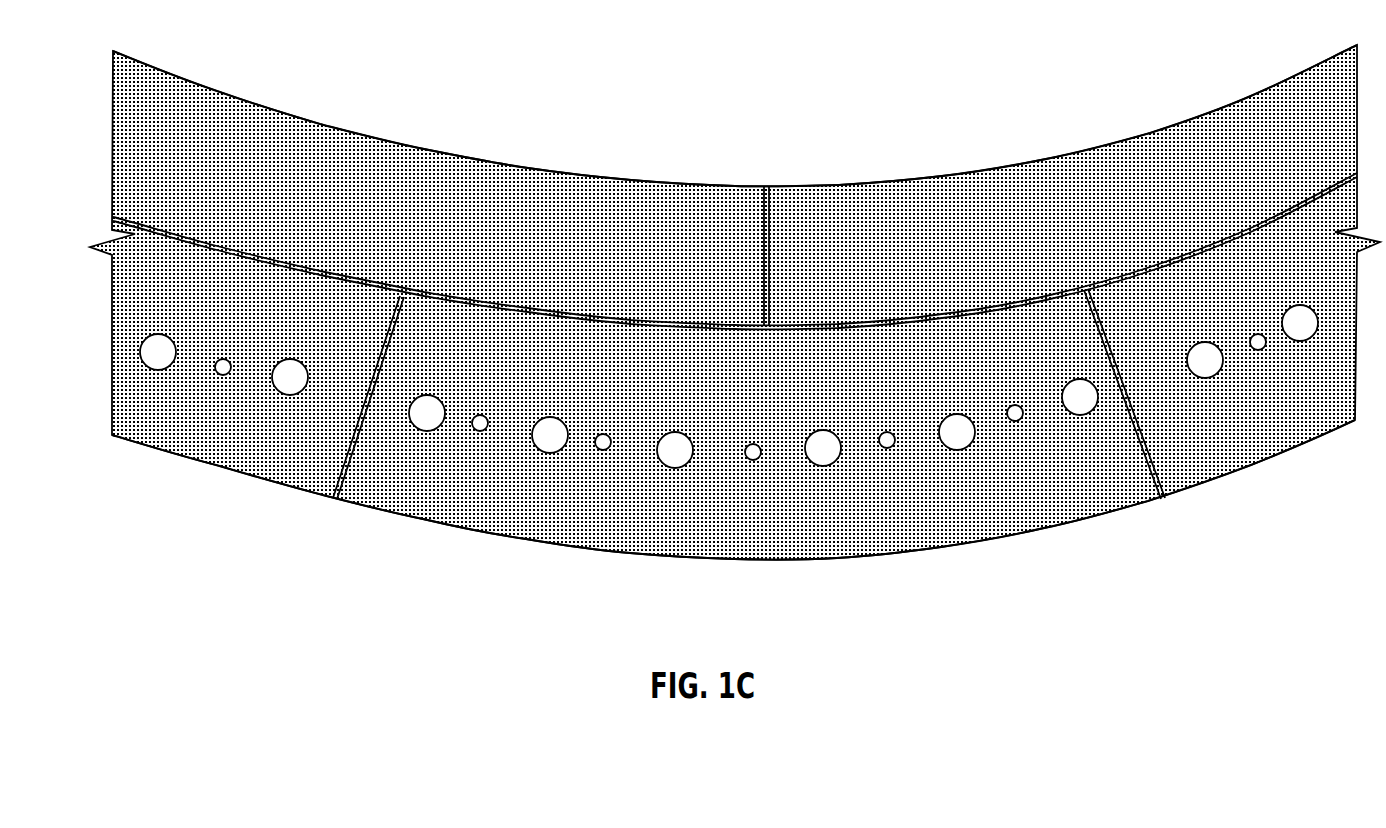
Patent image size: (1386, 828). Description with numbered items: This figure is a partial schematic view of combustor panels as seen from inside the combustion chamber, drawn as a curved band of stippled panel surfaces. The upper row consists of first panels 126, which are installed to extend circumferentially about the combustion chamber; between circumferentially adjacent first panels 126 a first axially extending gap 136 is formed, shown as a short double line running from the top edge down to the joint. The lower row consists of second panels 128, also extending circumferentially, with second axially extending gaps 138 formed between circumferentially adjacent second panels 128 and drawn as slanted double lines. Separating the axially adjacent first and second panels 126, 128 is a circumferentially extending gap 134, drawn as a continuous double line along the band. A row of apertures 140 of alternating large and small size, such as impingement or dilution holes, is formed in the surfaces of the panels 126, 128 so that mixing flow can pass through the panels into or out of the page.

The first panels 126 is at (445, 172).
The second panels 128 is at (172, 458).
The circumferentially extending gap 134 is at (315, 262).
The first axially extending gaps 136 is at (767, 190).
The second axially extending gaps 138 is at (340, 503).
The apertures 140 is at (632, 200).